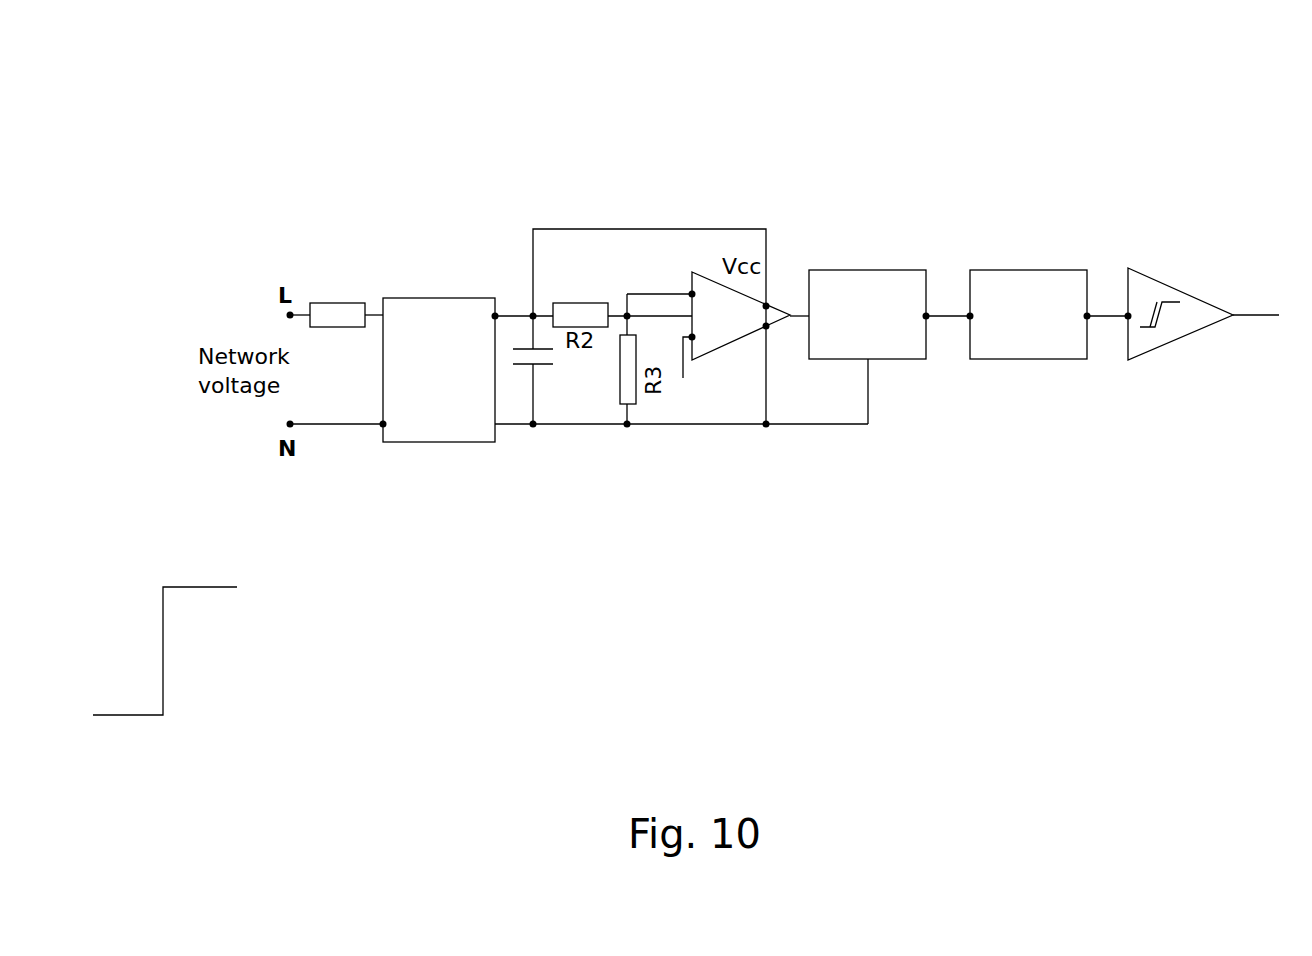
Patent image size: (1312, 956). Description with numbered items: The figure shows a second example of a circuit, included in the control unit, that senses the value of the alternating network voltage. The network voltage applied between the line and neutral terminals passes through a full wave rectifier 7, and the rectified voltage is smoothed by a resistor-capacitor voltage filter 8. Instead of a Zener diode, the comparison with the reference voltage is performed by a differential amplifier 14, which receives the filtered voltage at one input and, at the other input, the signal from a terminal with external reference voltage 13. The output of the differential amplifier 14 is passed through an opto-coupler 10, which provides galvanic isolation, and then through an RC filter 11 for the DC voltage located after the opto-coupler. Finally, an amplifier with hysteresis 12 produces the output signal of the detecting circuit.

The full wave rectifier 7 is at (420, 297).
The voltage filter 8 is at (348, 327).
The opto-coupler 10 is at (900, 270).
The RC filter 11 is at (1020, 270).
The amplifier with hysteresis 12 is at (1140, 357).
The terminal with external reference voltage 13 is at (681, 380).
The differential amplifier 14 is at (710, 280).